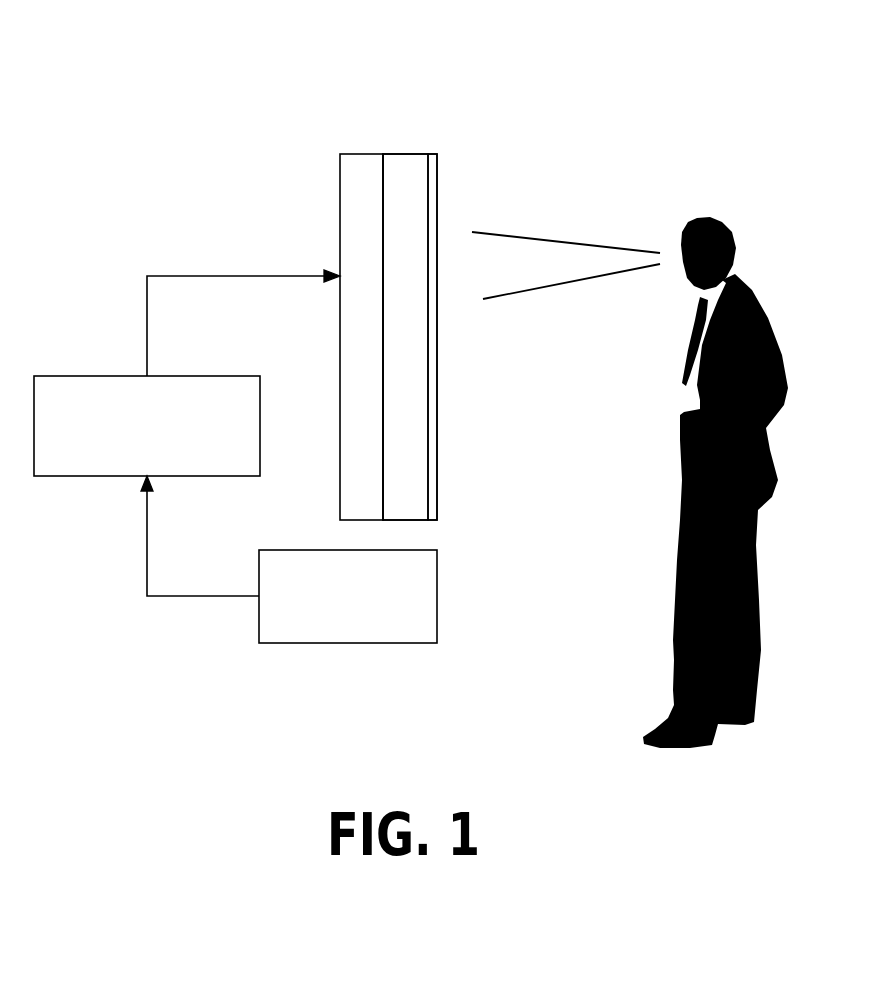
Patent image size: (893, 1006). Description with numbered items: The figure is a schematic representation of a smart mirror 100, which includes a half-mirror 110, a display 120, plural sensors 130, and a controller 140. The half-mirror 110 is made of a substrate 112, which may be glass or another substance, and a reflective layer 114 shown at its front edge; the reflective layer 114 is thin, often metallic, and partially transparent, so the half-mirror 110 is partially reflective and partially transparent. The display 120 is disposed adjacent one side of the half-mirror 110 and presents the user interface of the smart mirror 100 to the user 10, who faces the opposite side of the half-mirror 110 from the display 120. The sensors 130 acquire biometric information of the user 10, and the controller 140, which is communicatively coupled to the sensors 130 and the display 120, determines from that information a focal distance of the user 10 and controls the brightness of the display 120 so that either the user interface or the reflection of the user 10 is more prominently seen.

The smart mirror 100 is at (135, 88).
The half-mirror 110 is at (437, 147).
The substrate 112 is at (405, 475).
The reflective layer 114 is at (505, 443).
The display 120 is at (362, 154).
The sensors 130 is at (370, 625).
The controller 140 is at (168, 454).
The user 10 is at (677, 660).